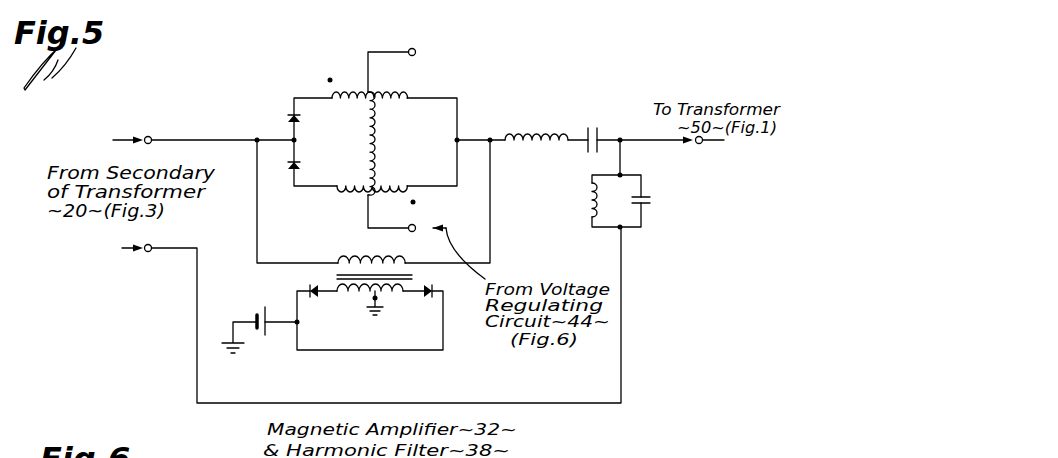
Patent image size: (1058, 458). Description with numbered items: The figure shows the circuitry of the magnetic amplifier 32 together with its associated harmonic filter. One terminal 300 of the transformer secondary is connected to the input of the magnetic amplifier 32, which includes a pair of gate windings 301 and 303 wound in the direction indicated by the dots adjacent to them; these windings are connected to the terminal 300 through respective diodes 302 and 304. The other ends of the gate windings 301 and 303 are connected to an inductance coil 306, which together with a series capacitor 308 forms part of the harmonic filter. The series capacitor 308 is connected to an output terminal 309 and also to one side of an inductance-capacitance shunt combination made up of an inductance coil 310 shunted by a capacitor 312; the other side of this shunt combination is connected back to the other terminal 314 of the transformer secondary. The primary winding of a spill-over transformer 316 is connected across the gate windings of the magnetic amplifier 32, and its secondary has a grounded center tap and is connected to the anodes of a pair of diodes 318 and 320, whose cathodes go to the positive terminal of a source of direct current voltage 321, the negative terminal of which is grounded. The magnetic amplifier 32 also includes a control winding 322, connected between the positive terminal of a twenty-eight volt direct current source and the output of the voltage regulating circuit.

The magnetic amplifier 32 is at (398, 128).
The terminal 300 is at (151, 136).
The gate winding 301 is at (352, 63).
The diode 302 is at (298, 113).
The gate winding 303 is at (380, 187).
The diode 304 is at (298, 169).
The inductance coil 306 is at (560, 147).
The series capacitor 308 is at (598, 137).
The output terminal 309 is at (699, 145).
The inductance coil 310 is at (593, 212).
The capacitor 312 is at (650, 210).
The terminal 314 is at (148, 253).
The spill-over transformer 316 is at (320, 272).
The diode 318 is at (430, 298).
The diode 320 is at (313, 298).
The source of direct current voltage 321 is at (265, 338).
The control winding 322 is at (376, 124).